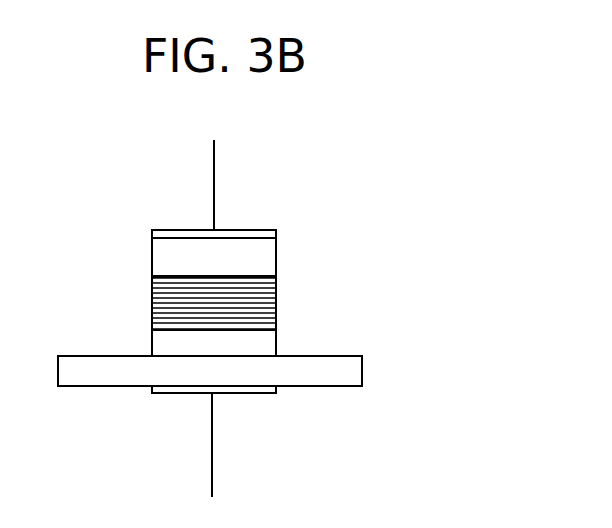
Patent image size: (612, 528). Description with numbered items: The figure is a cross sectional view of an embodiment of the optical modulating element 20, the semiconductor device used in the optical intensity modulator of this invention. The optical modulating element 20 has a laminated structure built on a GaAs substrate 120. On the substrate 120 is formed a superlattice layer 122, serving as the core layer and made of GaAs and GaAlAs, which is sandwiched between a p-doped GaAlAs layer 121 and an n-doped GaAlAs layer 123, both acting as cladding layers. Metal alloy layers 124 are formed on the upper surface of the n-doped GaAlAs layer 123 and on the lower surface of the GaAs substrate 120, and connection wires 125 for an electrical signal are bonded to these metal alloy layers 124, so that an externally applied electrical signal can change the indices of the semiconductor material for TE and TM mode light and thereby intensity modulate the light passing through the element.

The optical modulating element 20 is at (282, 231).
The GaAs substrate 120 is at (356, 374).
The p-doped GaAlAs layer (cladding layer) 121 is at (276, 343).
The superlattice layer (core layer) 122 is at (276, 295).
The n-doped GaAlAs layer (cladding layer) 123 is at (276, 252).
The metal alloy layers 124 is at (238, 230).
The lead wire 125 is at (214, 181).